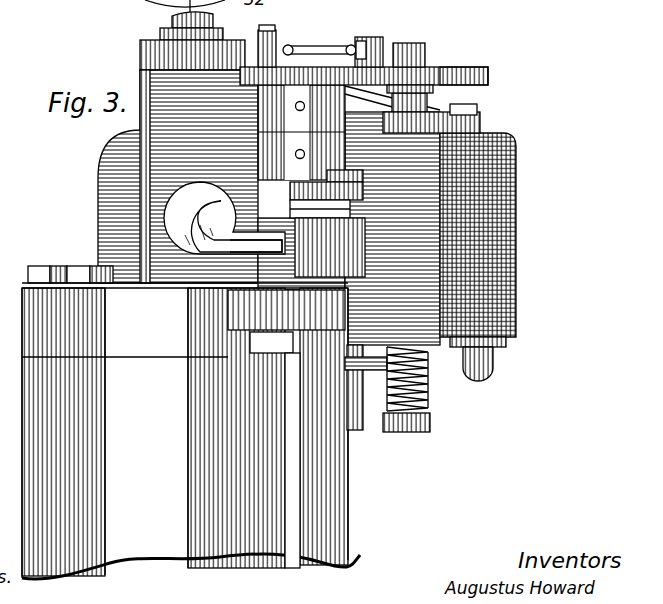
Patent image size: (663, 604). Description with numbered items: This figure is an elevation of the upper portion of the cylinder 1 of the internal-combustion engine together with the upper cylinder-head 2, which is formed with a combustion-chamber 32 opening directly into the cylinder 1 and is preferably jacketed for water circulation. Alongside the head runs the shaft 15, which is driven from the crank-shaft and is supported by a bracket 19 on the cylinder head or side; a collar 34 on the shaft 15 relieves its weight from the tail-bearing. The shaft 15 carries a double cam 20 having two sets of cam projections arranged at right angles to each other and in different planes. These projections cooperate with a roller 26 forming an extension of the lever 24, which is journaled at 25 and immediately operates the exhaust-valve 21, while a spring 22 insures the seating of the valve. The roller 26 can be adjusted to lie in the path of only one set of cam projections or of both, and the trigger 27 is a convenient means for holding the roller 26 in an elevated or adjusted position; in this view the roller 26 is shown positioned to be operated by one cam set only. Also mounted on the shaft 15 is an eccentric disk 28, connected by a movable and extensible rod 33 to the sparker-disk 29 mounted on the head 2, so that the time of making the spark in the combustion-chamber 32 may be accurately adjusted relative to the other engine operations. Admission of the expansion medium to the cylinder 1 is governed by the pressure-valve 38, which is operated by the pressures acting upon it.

The cylinder 1 is at (191, 433).
The cylinder-head 2 is at (185, 311).
The shaft 15 is at (300, 492).
The bracket 19 is at (348, 301).
The double cam 20 is at (308, 206).
The exhaust-valve 21 is at (191, 212).
The spring 22 is at (181, 196).
The lever 24 is at (262, 241).
The journal 25 is at (271, 342).
The roller 26 is at (365, 203).
The trigger 27 is at (352, 223).
The eccentric disk 28 is at (326, 67).
The sparker-disk 29 is at (489, 73).
The combustion-chamber 32 is at (508, 256).
The movable and extensible rod 33 is at (299, 47).
The collar 34 is at (301, 132).
The pressure-valve 38 is at (418, 368).